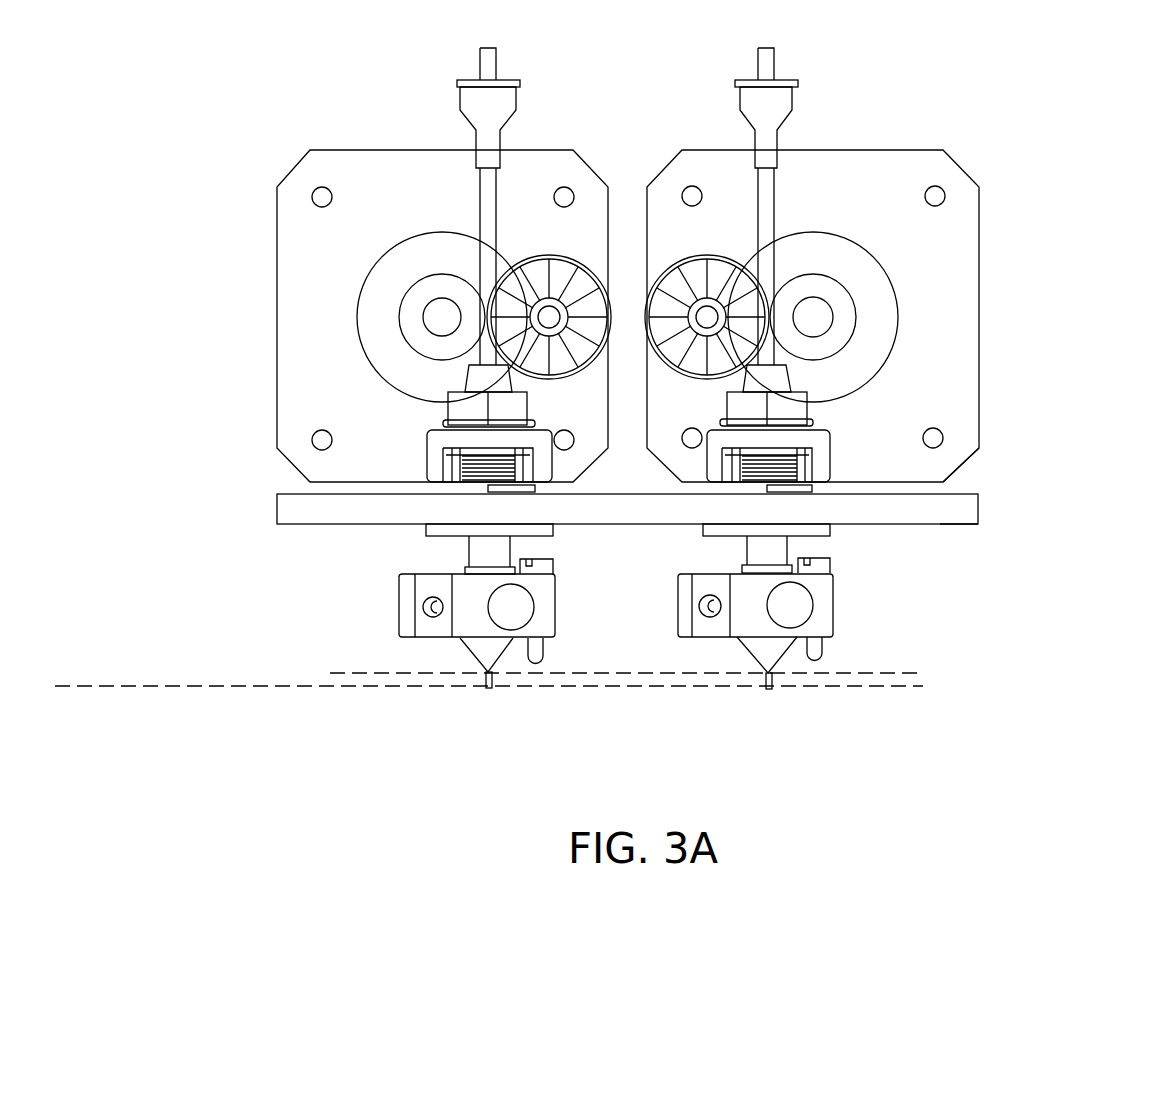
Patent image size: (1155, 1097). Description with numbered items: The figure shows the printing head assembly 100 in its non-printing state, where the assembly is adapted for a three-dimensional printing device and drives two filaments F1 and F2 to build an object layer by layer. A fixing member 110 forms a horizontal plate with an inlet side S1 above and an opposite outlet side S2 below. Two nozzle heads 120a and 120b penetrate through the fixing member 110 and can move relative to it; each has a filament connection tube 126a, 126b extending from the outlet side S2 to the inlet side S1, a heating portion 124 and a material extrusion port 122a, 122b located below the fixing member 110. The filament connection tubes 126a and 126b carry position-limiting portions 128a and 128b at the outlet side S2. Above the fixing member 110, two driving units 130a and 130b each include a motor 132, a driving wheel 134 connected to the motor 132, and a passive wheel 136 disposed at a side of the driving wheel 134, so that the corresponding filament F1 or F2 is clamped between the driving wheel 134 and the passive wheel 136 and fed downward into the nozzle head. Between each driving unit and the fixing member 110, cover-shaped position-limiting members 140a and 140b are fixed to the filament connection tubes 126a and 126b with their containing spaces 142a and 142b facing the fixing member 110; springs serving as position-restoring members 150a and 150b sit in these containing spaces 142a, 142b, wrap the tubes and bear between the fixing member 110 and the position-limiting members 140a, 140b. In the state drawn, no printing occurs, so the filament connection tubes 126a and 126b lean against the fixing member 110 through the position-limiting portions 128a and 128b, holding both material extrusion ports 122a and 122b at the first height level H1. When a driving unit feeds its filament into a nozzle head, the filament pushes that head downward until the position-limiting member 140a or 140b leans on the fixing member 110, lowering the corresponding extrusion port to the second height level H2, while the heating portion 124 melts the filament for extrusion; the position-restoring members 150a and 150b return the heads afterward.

The printing head assembly 100 is at (1145, 792).
The fixing member 110 is at (947, 507).
The nozzle head 120a is at (811, 641).
The nozzle head 120b is at (370, 641).
The material extrusion port 122a is at (772, 674).
The material extrusion port 122b is at (493, 674).
The heating portion 124 is at (437, 627).
The filament connection tube 126a is at (757, 381).
The filament connection tube 126b is at (470, 384).
The position-limiting portion 128a is at (718, 530).
The position-limiting portion 128b is at (430, 531).
The driving unit 130a is at (1058, 215).
The driving unit 130b is at (197, 215).
The motor 132 is at (305, 288).
The driving wheel 134 is at (412, 317).
The passive wheel 136 is at (538, 268).
The position-limiting member 140a is at (815, 405).
The position-limiting member 140b is at (452, 440).
The containing space 142a is at (807, 440).
The containing space 142b is at (452, 470).
The position-restoring member 150a is at (767, 488).
The position-restoring member 150b is at (488, 489).
The filament F1 is at (767, 197).
The filament F2 is at (487, 198).
The inlet side S1 is at (977, 467).
The outlet side S2 is at (968, 540).
The first height level H1 is at (883, 673).
The second height level H2 is at (867, 687).